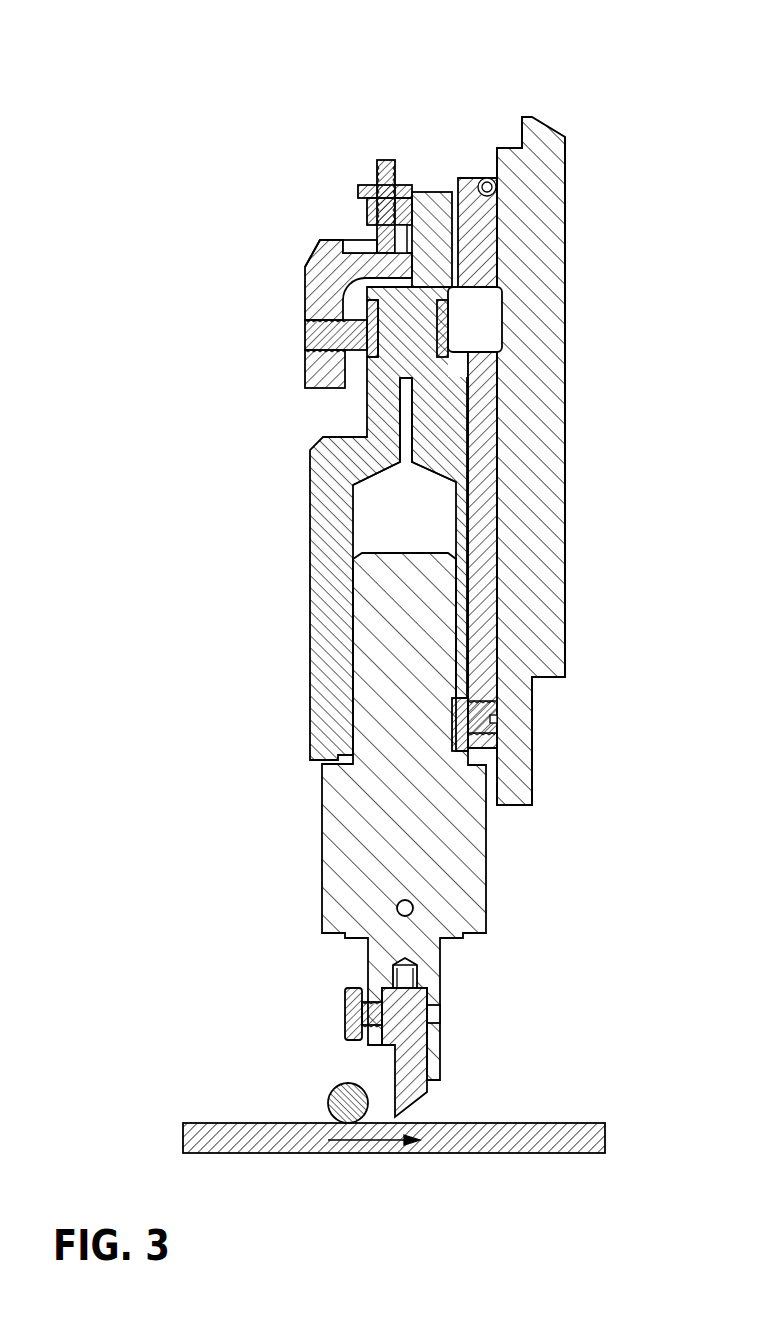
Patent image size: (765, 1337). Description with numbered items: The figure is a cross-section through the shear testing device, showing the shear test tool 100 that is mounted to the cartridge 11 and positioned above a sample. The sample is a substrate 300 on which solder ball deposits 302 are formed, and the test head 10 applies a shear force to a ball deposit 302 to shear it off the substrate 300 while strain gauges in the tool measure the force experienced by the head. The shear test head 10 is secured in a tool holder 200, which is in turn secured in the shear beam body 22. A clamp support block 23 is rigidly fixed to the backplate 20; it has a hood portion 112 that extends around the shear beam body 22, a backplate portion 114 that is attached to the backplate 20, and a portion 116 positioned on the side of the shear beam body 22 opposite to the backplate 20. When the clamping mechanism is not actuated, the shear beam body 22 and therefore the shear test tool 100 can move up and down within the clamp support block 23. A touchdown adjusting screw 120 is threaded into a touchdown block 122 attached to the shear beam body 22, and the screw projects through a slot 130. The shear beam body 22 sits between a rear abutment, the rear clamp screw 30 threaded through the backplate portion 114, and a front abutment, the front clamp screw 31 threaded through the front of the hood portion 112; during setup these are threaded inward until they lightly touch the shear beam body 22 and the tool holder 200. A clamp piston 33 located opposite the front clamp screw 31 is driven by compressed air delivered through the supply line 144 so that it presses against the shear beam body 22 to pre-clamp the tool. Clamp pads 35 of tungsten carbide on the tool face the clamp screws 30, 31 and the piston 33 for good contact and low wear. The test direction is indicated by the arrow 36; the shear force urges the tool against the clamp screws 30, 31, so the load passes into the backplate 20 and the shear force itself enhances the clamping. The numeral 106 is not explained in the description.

The cartridge 11 is at (114, 128).
The backplate 20 is at (565, 167).
The shear beam body 22 is at (310, 560).
The clamp support block 23 is at (300, 287).
The rear clamp screw 30 is at (470, 700).
The front clamp screw 31 is at (310, 331).
The clamp piston 33 is at (473, 321).
The clamp pads 35 is at (465, 700).
The arrow 36 is at (358, 1118).
The shear test head 10 is at (412, 1063).
The shear test tool 100 is at (255, 695).
The blade clamp bolt 106 is at (345, 1000).
The hood portion 112 is at (318, 246).
The backplate portion 114 is at (485, 497).
The portion of the clamp support block 116 is at (308, 373).
The touchdown adjusting screw 120 is at (380, 160).
The touchdown block 122 is at (434, 184).
The slot 130 is at (350, 250).
The compressed air supply line 144 is at (487, 178).
The tool holder 200 is at (316, 845).
The substrate 300 is at (295, 1123).
The solder ball deposit 302 is at (345, 1122).